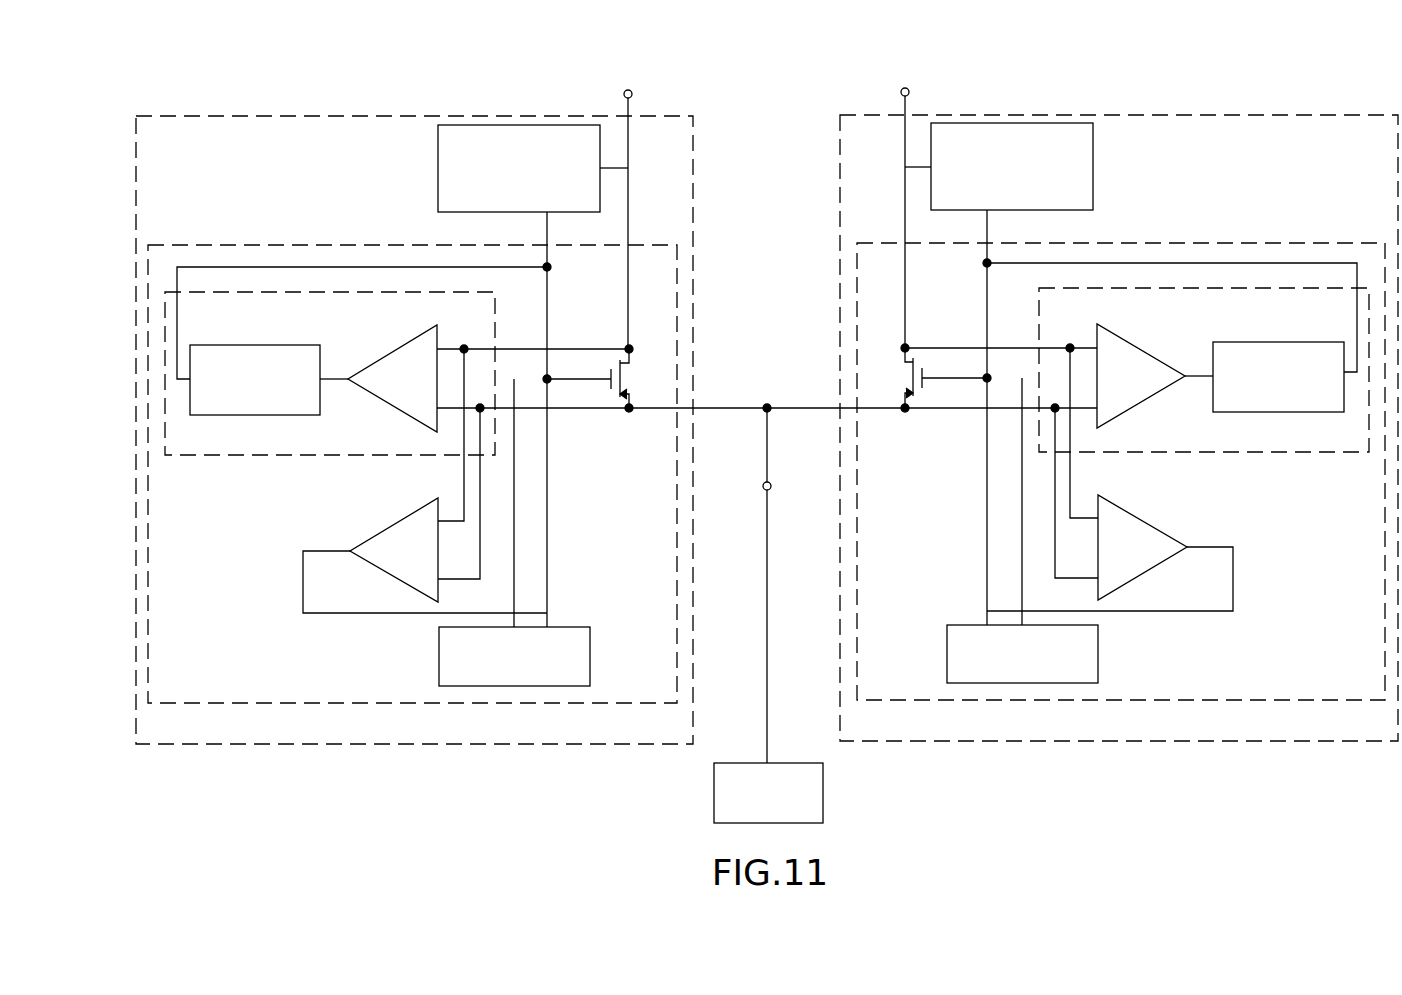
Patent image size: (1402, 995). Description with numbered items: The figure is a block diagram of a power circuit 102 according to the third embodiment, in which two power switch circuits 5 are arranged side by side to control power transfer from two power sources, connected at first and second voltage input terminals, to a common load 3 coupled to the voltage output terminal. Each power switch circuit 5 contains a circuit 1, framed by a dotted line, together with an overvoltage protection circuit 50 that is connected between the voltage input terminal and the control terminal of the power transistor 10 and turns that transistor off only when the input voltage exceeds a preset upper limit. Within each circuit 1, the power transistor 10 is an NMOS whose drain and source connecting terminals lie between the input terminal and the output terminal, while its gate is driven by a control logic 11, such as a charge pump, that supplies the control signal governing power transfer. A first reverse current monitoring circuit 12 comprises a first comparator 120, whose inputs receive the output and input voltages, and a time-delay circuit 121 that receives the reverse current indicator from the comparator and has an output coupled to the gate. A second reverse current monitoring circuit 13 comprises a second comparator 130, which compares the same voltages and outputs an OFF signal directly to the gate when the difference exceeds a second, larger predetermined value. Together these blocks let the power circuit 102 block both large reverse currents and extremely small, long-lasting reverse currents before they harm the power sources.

The power circuit 102 is at (795, 40).
The power switch circuit 5 is at (265, 104).
The power switch circuit 1 is at (275, 245).
The overvoltage protection circuit 50 is at (438, 160).
The first reverse current monitoring circuit 12 is at (220, 460).
The time-delay circuit 121 is at (262, 415).
The first comparator 120 is at (395, 400).
The second reverse current monitoring circuit 13 is at (355, 624).
The second comparator 130 is at (400, 520).
The control logic 11 is at (455, 686).
The power transistor 10 is at (618, 420).
The load 3 is at (823, 793).